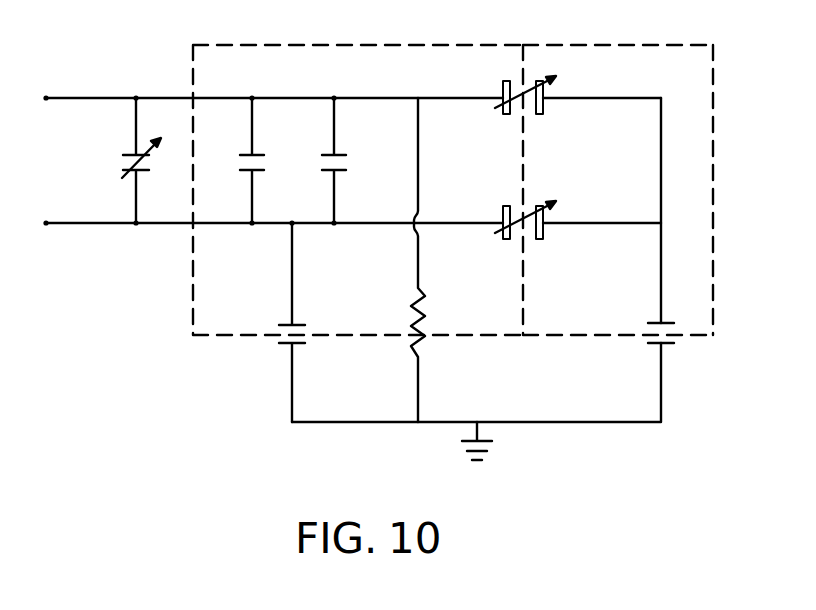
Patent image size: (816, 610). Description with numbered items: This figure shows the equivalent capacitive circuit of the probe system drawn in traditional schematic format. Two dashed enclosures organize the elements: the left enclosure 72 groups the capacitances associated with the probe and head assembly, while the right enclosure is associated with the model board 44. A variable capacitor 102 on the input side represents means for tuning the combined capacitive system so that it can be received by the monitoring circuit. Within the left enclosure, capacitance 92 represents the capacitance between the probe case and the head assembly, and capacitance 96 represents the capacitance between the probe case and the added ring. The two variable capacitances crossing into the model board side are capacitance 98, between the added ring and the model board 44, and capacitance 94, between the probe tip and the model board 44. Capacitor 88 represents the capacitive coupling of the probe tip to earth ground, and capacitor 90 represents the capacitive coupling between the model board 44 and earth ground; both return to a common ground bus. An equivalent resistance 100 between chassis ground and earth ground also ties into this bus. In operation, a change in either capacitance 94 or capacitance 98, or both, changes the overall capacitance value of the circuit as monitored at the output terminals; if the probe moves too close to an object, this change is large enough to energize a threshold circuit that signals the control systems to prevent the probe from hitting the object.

The matching network (dashed enclosure) 72 is at (213, 77).
The model board 44 is at (693, 121).
The variable capacitor 102 is at (139, 171).
The capacitance 92 is at (264, 171).
The capacitance 96 is at (340, 160).
The capacitance 98 is at (546, 112).
The capacitance 94 is at (546, 237).
The capacitor 88 is at (284, 344).
The equivalent resistance 100 is at (425, 344).
The capacitor 90 is at (668, 346).